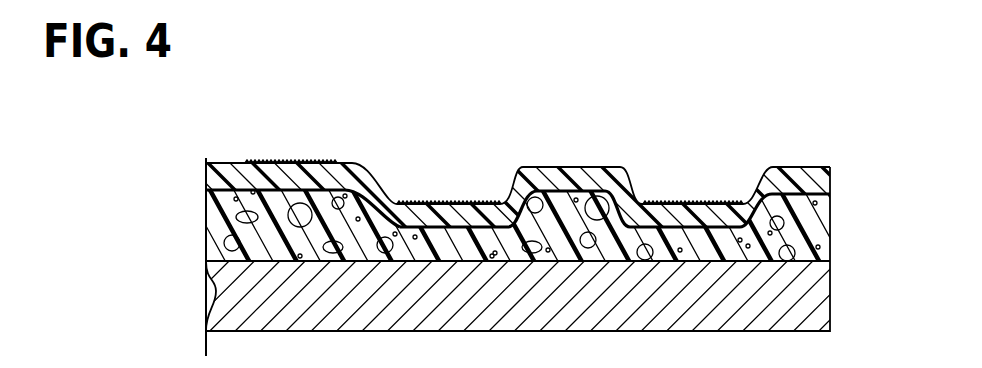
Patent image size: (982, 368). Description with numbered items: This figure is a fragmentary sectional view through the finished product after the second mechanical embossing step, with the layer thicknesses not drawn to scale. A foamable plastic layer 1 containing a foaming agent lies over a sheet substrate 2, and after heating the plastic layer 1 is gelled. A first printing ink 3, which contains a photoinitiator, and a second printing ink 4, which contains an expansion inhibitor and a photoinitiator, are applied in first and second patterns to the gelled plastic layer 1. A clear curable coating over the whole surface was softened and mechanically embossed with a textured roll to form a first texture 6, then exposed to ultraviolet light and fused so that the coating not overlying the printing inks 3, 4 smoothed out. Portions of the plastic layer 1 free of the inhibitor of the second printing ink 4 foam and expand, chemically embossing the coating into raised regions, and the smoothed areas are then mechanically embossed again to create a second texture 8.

The foamable plastic layer 1 is at (207, 232).
The sheet substrate 2 is at (225, 320).
The first printing ink 3 is at (214, 176).
The second printing ink 4 is at (482, 222).
The first texture 6 is at (285, 163).
The second texture 8 is at (580, 167).